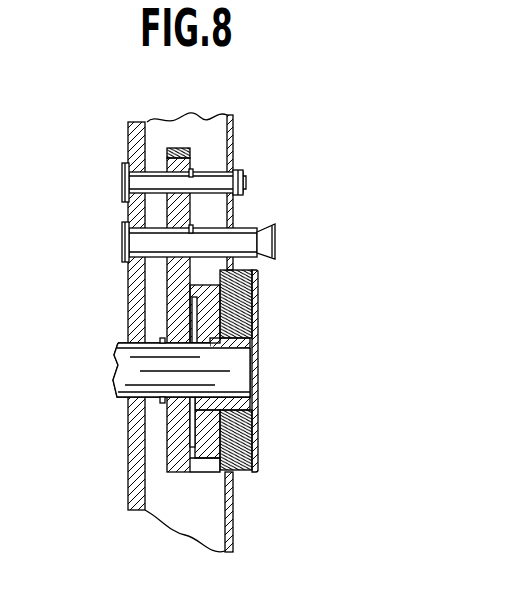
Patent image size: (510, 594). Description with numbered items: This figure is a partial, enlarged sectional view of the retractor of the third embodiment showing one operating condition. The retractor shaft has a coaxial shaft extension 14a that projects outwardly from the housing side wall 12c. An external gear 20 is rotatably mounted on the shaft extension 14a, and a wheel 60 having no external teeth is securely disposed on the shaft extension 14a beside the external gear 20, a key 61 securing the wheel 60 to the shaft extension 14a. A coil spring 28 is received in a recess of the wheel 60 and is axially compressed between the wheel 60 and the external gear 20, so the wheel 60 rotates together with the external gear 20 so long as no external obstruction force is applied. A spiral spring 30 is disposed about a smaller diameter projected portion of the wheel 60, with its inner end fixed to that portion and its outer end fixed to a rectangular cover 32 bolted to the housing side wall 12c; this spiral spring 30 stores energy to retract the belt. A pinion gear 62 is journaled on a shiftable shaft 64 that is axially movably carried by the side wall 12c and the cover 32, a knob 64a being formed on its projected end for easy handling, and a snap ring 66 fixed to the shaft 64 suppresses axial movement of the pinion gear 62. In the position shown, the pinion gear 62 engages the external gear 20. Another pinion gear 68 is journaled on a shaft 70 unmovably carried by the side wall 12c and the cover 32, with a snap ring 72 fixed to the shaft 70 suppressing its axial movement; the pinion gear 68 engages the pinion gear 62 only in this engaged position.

The housing side wall 12c is at (135, 315).
The pinion gear 68 is at (233, 145).
The coil spring 28 is at (233, 492).
The external gear 20 is at (172, 430).
The rectangular cover 32 is at (190, 463).
The snap ring 66 is at (224, 269).
The spiral spring 30 is at (248, 300).
The wheel 60 is at (247, 425).
The key 61 is at (256, 345).
The shaft extension 14a is at (240, 378).
The shaft 70 is at (244, 182).
The snap ring 72 is at (193, 173).
The shiftable shaft 64 is at (276, 228).
The knob 64a is at (278, 246).
The pinion gear 62 is at (193, 229).